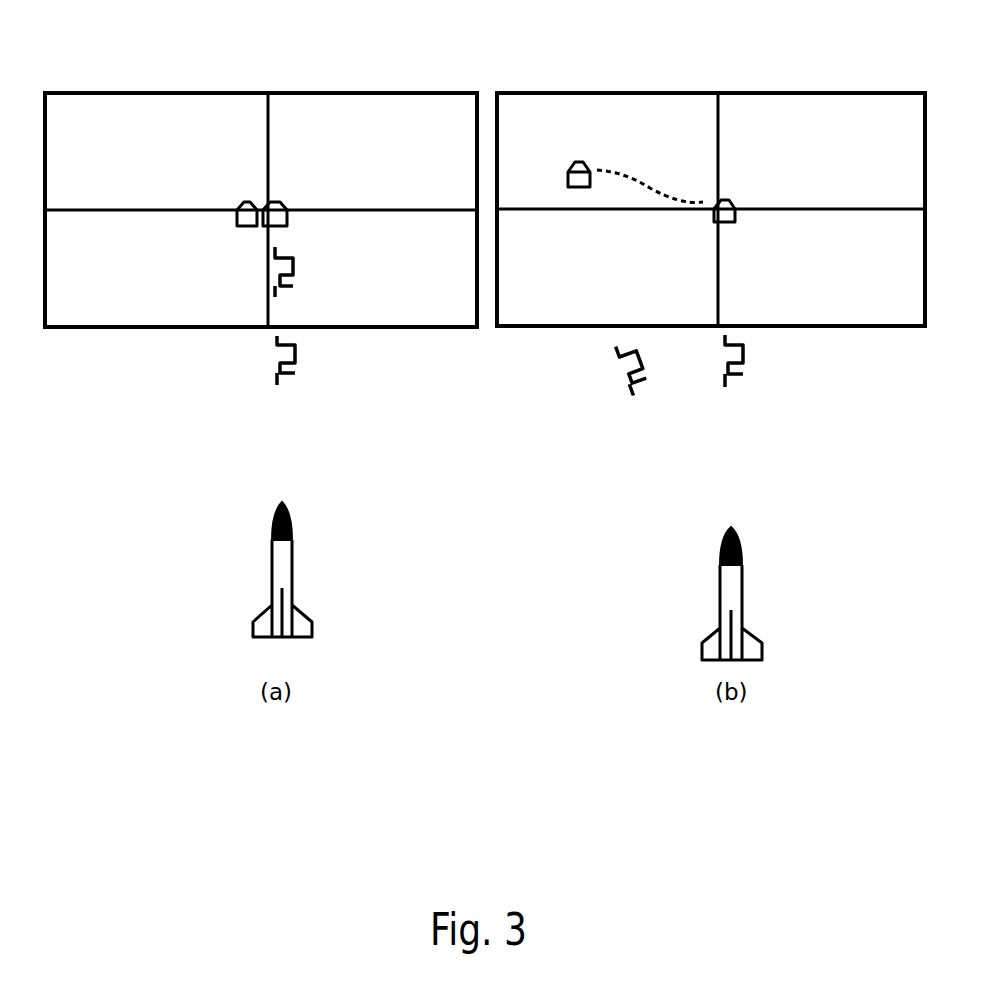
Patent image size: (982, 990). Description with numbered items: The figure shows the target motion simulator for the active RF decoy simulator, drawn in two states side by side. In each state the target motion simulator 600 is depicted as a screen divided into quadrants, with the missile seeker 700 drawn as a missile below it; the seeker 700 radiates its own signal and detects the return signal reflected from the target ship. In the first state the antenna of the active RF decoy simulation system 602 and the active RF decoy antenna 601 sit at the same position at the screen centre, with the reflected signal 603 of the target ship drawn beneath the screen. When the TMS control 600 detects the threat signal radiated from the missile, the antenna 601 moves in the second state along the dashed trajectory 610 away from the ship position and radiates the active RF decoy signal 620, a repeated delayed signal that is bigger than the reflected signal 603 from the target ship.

The target motion simulator 600 is at (422, 93).
The active RF decoy antenna 601 is at (247, 204).
The active RF decoy simulation system 602 is at (278, 202).
The reflected signal 603 is at (295, 363).
The trajectory 610 is at (657, 188).
The signal of the active RF decoy 620 is at (620, 370).
The missile seeker 700 is at (303, 575).